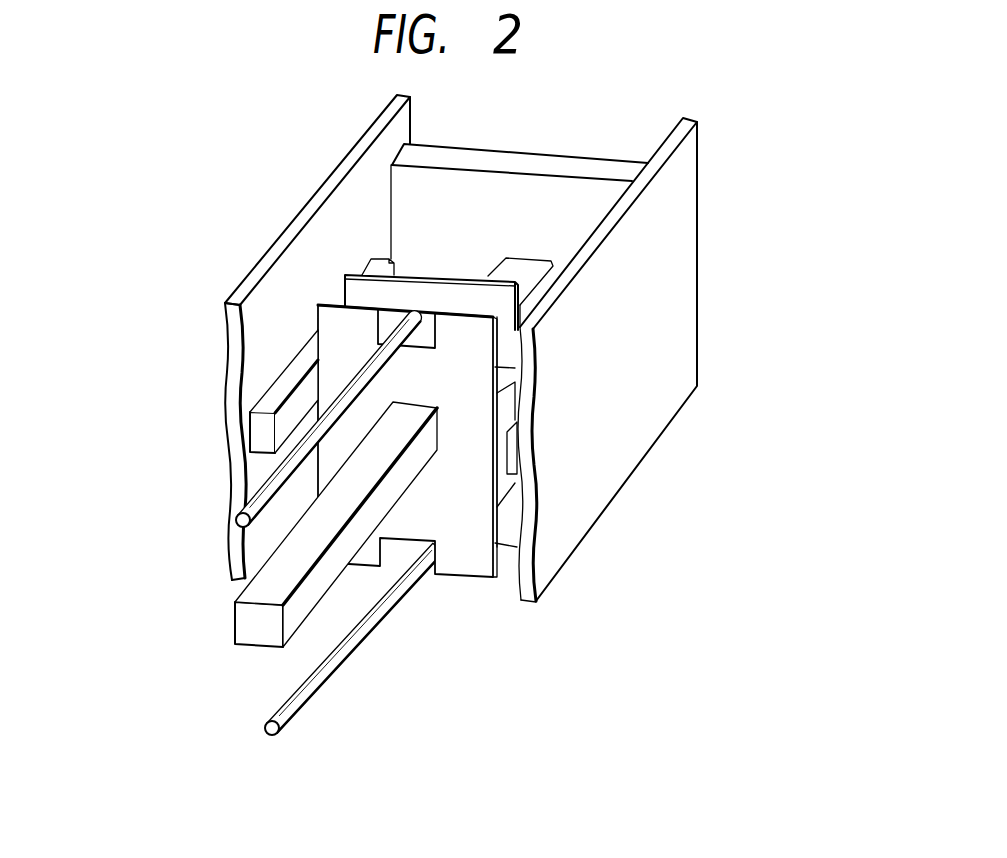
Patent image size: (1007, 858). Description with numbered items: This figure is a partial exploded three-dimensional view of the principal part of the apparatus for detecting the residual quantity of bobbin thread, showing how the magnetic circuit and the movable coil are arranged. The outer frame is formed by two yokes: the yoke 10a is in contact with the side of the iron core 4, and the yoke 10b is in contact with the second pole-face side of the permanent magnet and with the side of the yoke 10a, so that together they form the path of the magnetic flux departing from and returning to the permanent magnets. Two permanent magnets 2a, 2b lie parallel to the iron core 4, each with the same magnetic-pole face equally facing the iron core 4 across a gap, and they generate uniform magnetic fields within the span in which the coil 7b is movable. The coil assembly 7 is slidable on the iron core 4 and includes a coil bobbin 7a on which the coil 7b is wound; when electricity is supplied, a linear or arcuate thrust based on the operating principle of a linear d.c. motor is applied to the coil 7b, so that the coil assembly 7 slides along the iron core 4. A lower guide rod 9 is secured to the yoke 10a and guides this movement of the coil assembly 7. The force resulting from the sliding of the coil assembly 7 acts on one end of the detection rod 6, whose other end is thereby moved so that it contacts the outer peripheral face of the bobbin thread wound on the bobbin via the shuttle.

The yoke 10a is at (510, 158).
The yoke 10b is at (595, 500).
The coil assembly 7 is at (473, 578).
The coil bobbin 7a is at (453, 567).
The coil 7b is at (505, 408).
The permanent magnet 2a is at (270, 395).
The permanent magnet 2b is at (508, 455).
The iron core 4 is at (315, 590).
The detection rod 6 is at (260, 498).
The lower guide rod 9 is at (322, 667).